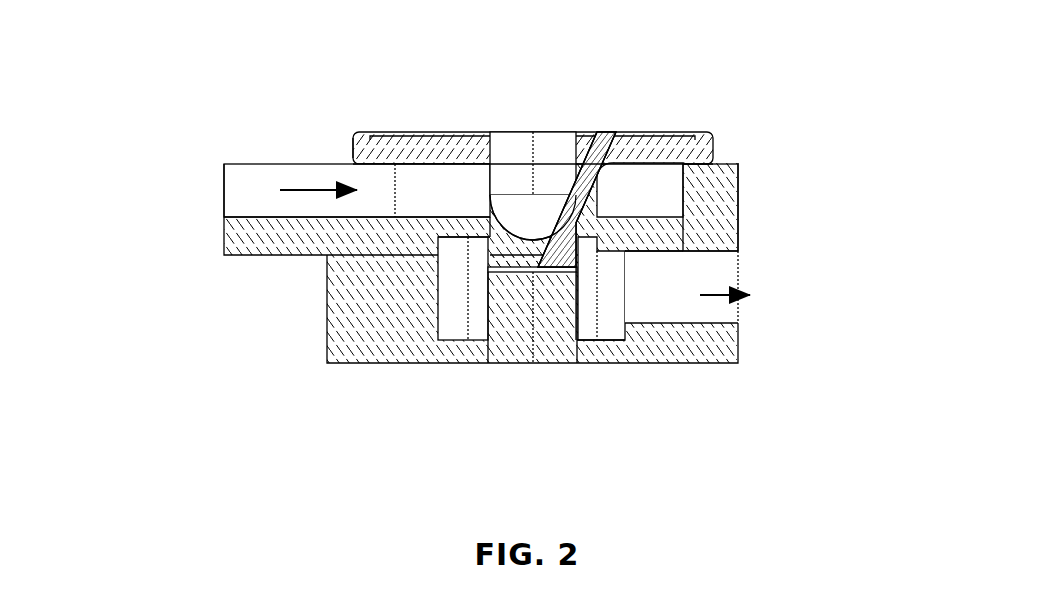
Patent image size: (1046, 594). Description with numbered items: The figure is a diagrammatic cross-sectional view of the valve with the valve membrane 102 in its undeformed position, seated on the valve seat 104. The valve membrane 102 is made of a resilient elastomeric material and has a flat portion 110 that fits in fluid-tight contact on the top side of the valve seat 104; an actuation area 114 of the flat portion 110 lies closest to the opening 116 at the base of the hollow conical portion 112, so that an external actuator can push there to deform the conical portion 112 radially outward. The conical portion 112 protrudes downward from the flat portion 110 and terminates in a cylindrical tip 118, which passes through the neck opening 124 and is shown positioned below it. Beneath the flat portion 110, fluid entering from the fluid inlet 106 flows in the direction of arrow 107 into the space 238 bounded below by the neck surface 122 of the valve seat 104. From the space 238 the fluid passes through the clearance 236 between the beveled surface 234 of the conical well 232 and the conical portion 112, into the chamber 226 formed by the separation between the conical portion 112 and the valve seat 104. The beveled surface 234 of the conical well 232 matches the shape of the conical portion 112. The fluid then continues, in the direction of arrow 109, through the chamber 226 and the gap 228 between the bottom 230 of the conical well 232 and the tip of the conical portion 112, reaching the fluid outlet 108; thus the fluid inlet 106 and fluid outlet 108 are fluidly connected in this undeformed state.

The valve membrane 102 is at (715, 136).
The valve seat 104 is at (730, 201).
The fluid inlet 106 is at (247, 202).
The arrow 107 is at (320, 187).
The fluid outlet 108 is at (712, 260).
The arrow 109 is at (723, 300).
The flat portion 110 is at (658, 157).
The conical portion 112 is at (507, 230).
The actuation area 114 is at (597, 148).
The opening 116 is at (542, 134).
The cylindrical tip 118 is at (527, 251).
The neck surface 122 is at (640, 215).
The neck opening 124 is at (468, 222).
The chamber 226 is at (456, 316).
The gap 228 is at (530, 273).
The bottom 230 is at (548, 303).
The conical well 232 is at (623, 248).
The beveled surface 234 is at (592, 237).
The clearance 236 is at (478, 232).
The space 238 is at (645, 187).